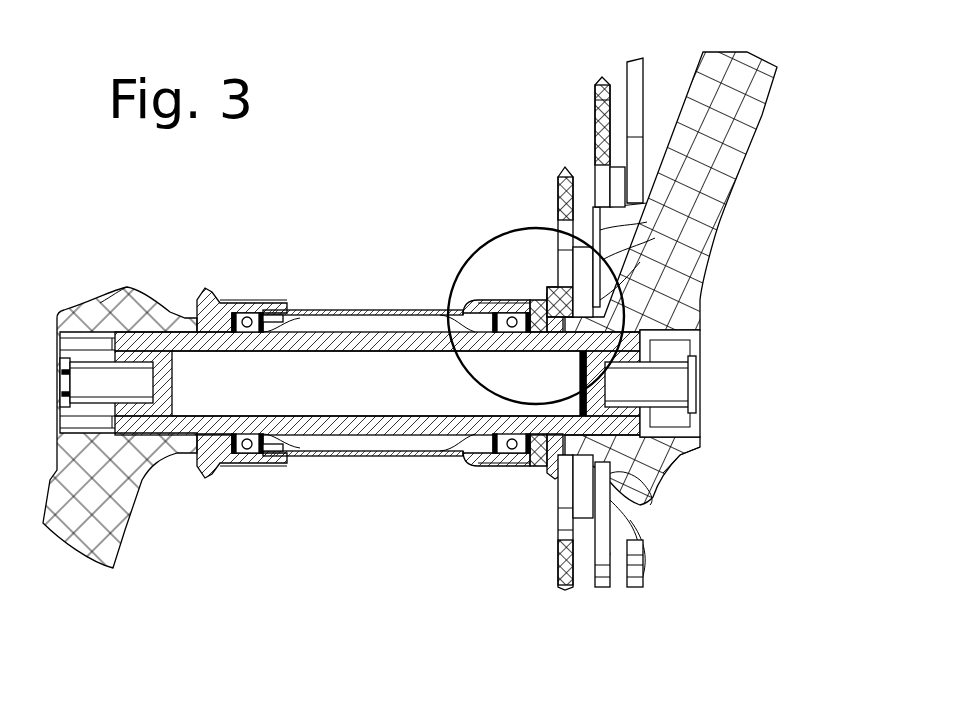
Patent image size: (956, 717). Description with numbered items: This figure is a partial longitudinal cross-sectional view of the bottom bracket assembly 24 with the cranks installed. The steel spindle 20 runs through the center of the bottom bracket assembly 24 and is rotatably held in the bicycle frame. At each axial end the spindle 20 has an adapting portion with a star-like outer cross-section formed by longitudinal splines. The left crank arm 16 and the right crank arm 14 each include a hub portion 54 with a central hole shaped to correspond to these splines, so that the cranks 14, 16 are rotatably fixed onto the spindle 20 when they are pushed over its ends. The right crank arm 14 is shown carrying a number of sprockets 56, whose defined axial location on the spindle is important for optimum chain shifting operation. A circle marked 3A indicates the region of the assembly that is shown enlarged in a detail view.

The crank arm 14 is at (735, 152).
The crank arm 16 is at (92, 538).
The spindle 20 is at (240, 350).
The bottom bracket assembly 24 is at (318, 497).
The hub portion 54 is at (128, 300).
The sprockets 56 is at (557, 185).
The detail view circle 3A is at (468, 258).